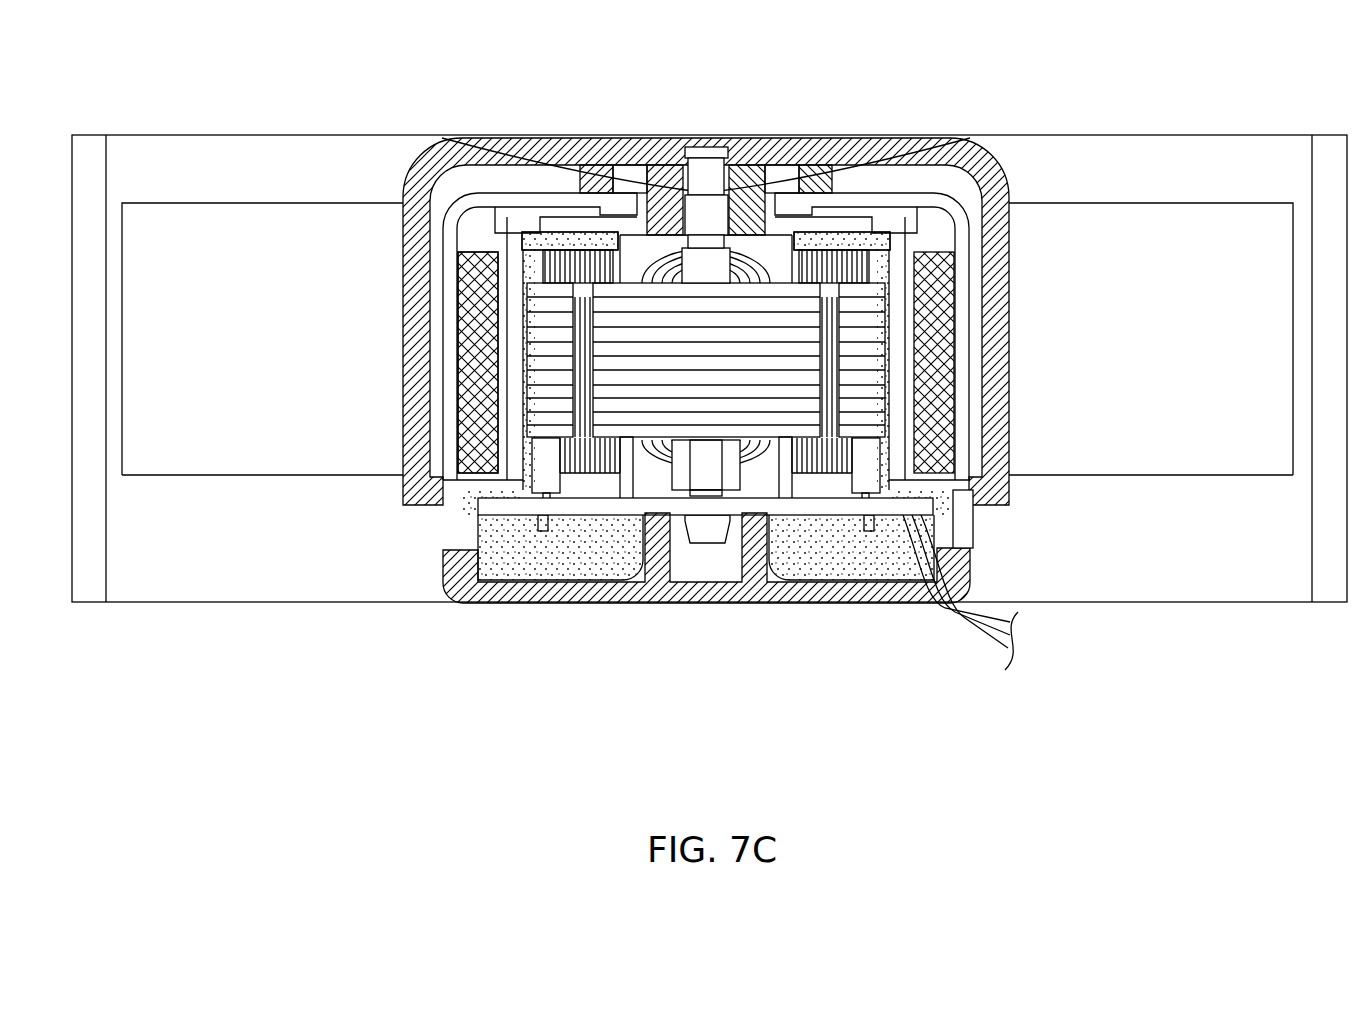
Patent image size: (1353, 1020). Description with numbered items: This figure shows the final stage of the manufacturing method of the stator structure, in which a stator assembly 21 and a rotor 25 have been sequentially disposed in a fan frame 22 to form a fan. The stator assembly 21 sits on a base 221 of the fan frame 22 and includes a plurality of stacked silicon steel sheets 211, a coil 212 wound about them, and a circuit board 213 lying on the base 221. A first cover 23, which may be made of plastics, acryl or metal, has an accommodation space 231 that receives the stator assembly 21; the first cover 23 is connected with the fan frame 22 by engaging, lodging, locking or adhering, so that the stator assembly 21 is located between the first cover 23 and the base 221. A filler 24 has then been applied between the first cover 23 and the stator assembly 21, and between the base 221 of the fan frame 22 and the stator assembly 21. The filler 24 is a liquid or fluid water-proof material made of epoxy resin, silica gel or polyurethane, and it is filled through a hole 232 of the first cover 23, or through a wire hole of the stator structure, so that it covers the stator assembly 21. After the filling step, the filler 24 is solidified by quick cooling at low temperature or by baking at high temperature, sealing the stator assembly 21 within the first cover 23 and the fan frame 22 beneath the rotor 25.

The stator assembly 21 is at (745, 357).
The stacked silicon steel sheets 211 is at (868, 347).
The coil 212 is at (850, 263).
The circuit board 213 is at (973, 498).
The fan frame 22 is at (87, 160).
The base 221 is at (563, 598).
The first cover 23 is at (512, 392).
The accommodation space 231 is at (538, 248).
The hole 232 is at (862, 245).
The filler 24 is at (527, 265).
The rotor 25 is at (658, 137).